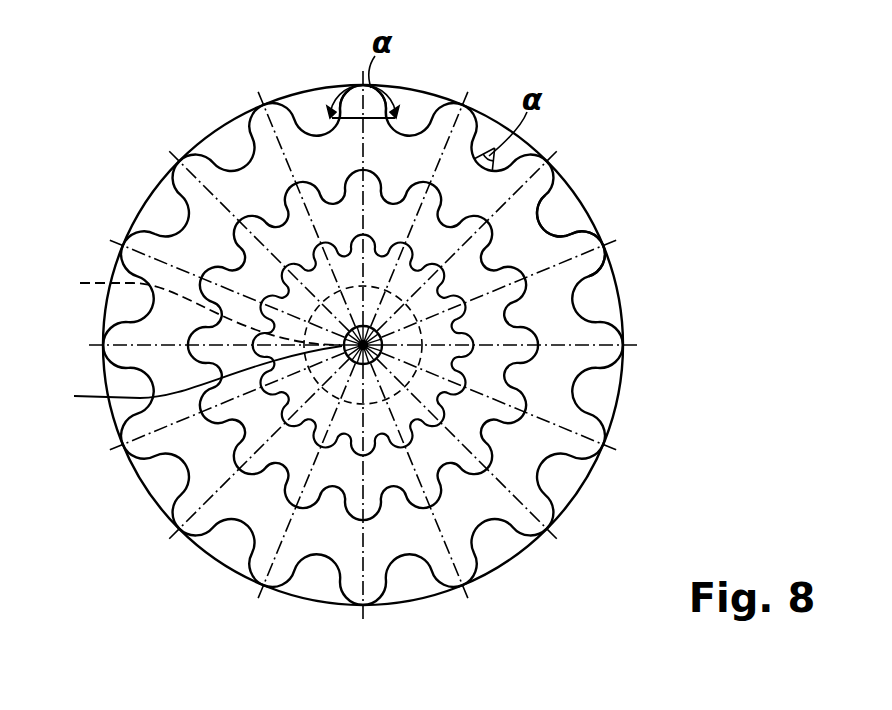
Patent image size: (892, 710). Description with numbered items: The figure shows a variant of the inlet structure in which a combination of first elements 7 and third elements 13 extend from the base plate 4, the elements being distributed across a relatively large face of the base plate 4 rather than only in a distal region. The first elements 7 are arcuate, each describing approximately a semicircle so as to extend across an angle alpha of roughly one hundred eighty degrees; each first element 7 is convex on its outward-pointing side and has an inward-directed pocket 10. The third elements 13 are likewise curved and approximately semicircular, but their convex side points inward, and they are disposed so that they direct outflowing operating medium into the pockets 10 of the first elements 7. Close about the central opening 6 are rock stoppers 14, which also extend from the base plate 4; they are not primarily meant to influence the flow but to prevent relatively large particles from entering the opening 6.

The base plate 4 is at (412, 105).
The opening 6 is at (196, 380).
The first elements 7 is at (310, 98).
The pocket 10 is at (253, 115).
The third elements 13 is at (548, 228).
The rock stoppers 14 is at (187, 305).